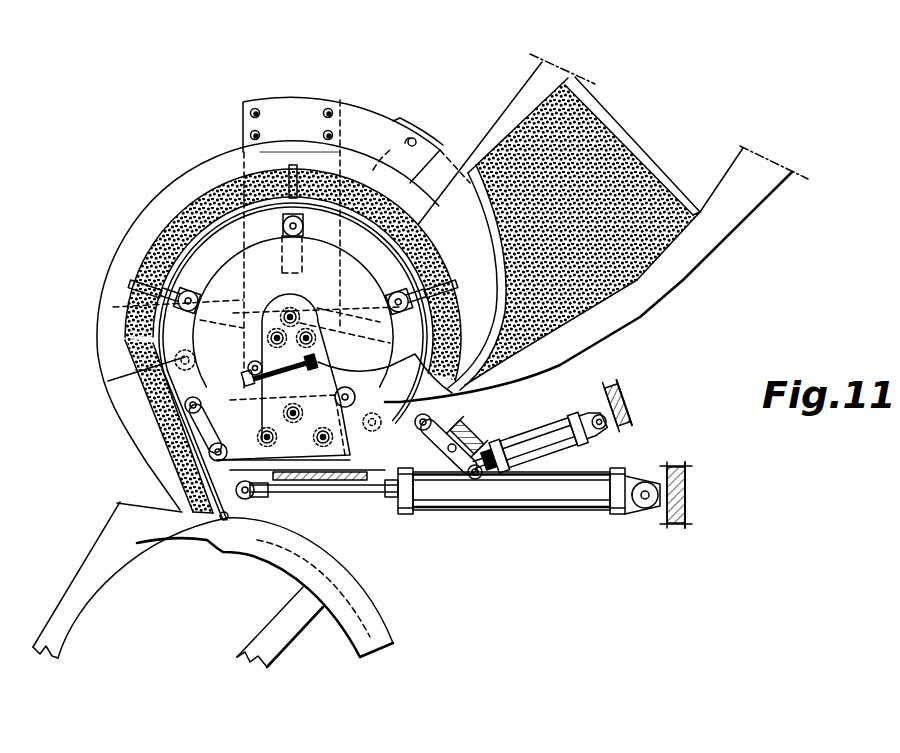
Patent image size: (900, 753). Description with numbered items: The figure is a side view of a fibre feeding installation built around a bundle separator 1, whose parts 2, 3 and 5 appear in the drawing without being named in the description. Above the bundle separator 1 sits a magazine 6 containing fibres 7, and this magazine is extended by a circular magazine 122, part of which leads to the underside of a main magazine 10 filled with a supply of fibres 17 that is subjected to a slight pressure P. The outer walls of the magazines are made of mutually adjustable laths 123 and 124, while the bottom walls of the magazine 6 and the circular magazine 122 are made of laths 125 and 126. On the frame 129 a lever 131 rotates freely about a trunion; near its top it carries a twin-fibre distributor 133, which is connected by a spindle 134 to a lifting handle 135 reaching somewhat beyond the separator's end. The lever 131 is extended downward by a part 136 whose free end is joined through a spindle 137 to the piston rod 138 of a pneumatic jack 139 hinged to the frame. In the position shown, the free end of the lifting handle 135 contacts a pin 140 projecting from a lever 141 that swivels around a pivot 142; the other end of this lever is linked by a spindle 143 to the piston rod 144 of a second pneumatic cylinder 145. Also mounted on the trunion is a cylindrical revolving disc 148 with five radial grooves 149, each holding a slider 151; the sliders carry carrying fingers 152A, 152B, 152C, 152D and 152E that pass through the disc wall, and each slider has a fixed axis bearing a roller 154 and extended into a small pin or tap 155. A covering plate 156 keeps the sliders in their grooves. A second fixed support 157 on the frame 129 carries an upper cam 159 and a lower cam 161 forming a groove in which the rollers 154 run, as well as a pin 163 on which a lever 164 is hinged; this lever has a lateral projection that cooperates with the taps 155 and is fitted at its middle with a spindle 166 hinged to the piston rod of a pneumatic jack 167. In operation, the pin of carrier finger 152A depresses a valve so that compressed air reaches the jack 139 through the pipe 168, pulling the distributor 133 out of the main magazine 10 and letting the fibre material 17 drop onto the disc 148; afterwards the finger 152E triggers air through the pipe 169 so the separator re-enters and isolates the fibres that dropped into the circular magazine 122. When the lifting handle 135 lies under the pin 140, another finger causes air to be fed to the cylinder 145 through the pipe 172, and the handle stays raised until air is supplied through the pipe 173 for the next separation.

The bundle separator 1 is at (345, 569).
The pivot pin 2 is at (226, 520).
The frame arm 3 is at (283, 638).
The frame arm 5 is at (52, 600).
The magazine 6 is at (160, 457).
The fibres 7 is at (165, 417).
The main magazine 10 is at (487, 103).
The slight pressure P is at (640, 149).
The supply of fibres 17 is at (673, 200).
The circular magazine 122 is at (161, 217).
The laths 123 is at (134, 233).
The laths 124 is at (139, 432).
The laths 125 is at (213, 226).
The laths 126 is at (293, 274).
The frame 129 is at (353, 481).
The lever 131 is at (343, 158).
The twin-fibre distributor 133 is at (345, 112).
The spindle 134 is at (413, 154).
The lifting handle 135 is at (438, 146).
The part 136 is at (282, 493).
The spindle 137 is at (248, 497).
The piston rod 138 is at (385, 497).
The pneumatic jack 139 is at (548, 505).
The pin 140 is at (423, 416).
The lever 141 is at (460, 422).
The pivot 142 is at (453, 450).
The spindle 143 is at (473, 513).
The piston rod 144 is at (495, 475).
The second pneumatic cylinder 145 is at (570, 425).
The cylindrical revolving disc 148 is at (190, 264).
The radial grooves 149 is at (302, 244).
The slider 151 is at (222, 309).
The carrier finger 152A is at (450, 286).
The carrying finger 152B is at (282, 175).
The carrying finger 152C is at (147, 292).
The carrying finger 152D is at (190, 361).
The carrying finger 152E is at (378, 434).
The roller 154 is at (189, 291).
The pin or tap 155 is at (450, 302).
The covering plate 156 is at (217, 266).
The second fixed support 157 is at (311, 450).
The upper cam 159 is at (380, 327).
The lower cam 161 is at (112, 391).
The pin 163 is at (187, 473).
The lever 164 is at (193, 422).
The spindle 166 is at (236, 388).
The pneumatic jack 167 is at (332, 357).
The pipe 168 is at (398, 486).
The pipe 169 is at (617, 490).
The pipe 172 is at (583, 437).
The pipe 173 is at (532, 441).